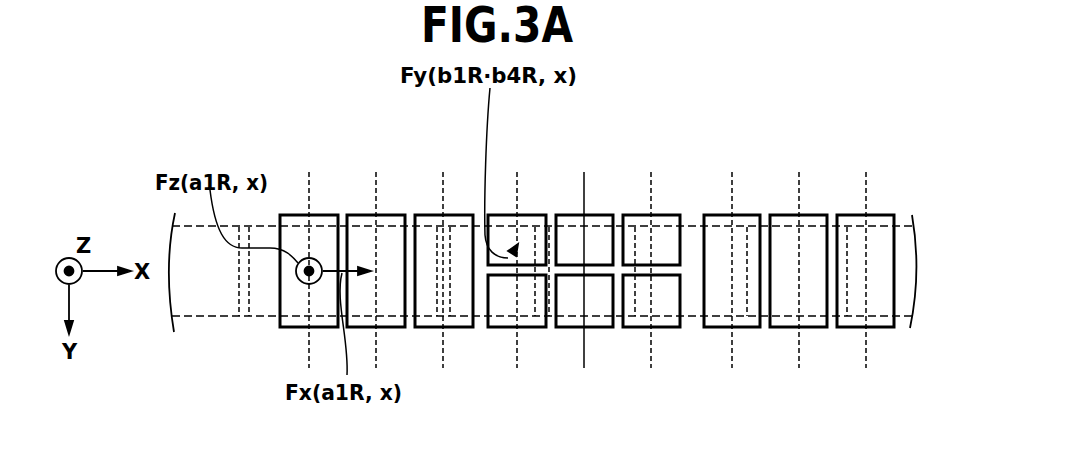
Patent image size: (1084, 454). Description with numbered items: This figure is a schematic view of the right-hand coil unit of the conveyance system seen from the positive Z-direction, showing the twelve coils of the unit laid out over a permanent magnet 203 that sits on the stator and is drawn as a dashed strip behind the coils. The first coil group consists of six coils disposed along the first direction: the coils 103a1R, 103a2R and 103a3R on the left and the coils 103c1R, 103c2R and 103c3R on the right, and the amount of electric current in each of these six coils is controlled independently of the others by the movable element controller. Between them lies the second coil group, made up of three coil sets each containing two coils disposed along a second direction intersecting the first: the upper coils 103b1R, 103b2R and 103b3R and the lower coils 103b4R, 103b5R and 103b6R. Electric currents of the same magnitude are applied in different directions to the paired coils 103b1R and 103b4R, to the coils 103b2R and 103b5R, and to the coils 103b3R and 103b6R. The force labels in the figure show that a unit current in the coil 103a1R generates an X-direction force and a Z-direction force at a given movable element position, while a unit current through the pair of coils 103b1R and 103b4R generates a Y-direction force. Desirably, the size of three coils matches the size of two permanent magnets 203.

The permanent magnet 203 is at (192, 317).
The coil 103a1R is at (297, 215).
The coil 103a2R is at (360, 215).
The coil 103a3R is at (433, 215).
The coil 103b1R is at (530, 215).
The coil 103b2R is at (597, 217).
The coil 103b3R is at (633, 215).
The coil 103b4R is at (500, 327).
The coil 103b5R is at (570, 327).
The coil 103b6R is at (663, 327).
The coil 103c1R is at (715, 215).
The coil 103c2R is at (778, 215).
The coil 103c3R is at (847, 215).